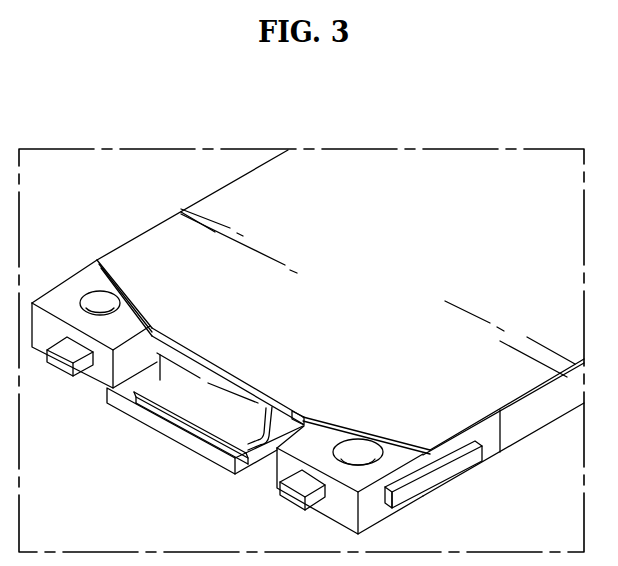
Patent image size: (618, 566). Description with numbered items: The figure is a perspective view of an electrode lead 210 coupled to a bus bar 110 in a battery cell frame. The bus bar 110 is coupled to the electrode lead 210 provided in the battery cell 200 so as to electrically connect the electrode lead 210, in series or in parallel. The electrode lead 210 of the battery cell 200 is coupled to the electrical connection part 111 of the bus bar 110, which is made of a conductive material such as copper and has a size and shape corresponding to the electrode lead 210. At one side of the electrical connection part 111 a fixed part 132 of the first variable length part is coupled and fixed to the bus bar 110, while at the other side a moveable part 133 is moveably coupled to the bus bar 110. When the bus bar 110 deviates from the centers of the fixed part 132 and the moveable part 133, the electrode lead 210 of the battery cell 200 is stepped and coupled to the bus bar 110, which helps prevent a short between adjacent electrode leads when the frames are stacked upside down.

The bus bar 110 is at (118, 472).
The electrical connection part 111 is at (118, 402).
The fixed part 132 is at (342, 507).
The moveable part 133 is at (61, 298).
The battery cell 200 is at (326, 177).
The electrode lead 210 is at (173, 403).